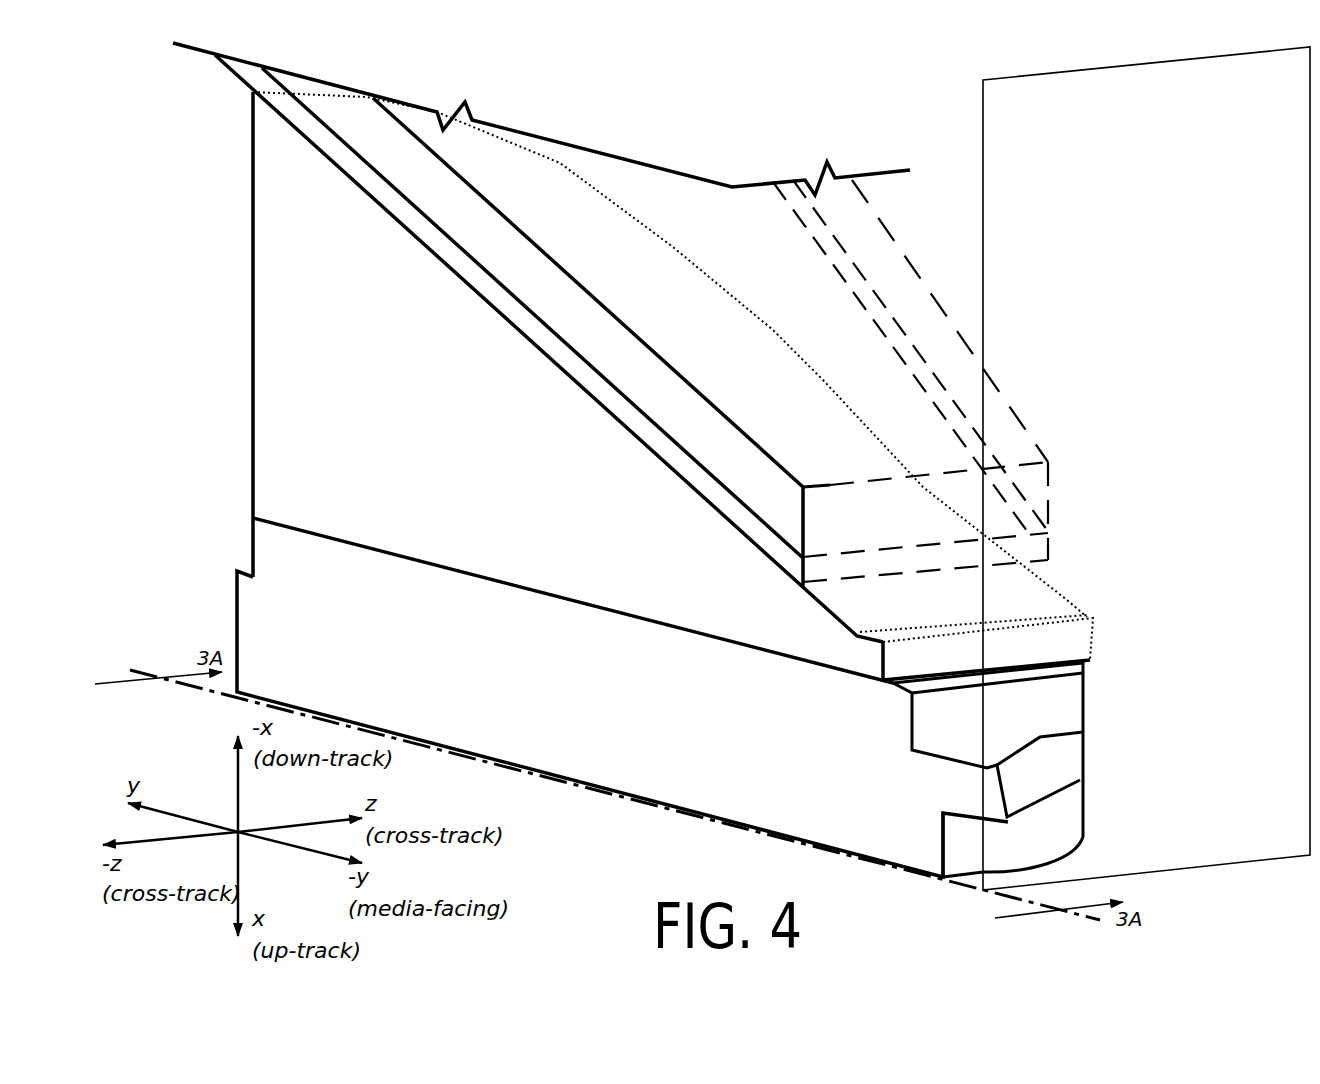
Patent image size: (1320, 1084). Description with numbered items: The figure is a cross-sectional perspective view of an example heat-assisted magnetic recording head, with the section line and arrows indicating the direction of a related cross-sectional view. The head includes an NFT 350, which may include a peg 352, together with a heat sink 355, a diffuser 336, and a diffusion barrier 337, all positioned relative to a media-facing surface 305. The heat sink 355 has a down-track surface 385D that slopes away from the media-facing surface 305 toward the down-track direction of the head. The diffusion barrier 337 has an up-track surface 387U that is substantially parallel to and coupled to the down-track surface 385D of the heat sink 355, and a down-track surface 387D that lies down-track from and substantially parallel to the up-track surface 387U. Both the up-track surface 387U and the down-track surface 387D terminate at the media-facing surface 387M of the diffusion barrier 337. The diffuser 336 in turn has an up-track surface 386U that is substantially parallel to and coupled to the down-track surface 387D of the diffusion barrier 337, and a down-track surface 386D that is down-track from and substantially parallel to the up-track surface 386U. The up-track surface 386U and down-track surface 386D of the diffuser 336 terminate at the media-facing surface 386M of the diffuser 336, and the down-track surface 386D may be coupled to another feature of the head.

The media-facing surface 305 is at (1282, 97).
The NFT 350 is at (610, 712).
The peg 352 is at (1013, 822).
The heat sink 355 is at (470, 429).
The diffuser 336 is at (532, 328).
The diffusion barrier 337 is at (447, 263).
The down-track surface of heat sink 385D is at (618, 427).
The up-track surface of diffuser 386U is at (826, 547).
The media-facing surface of diffuser 386M is at (925, 493).
The down-track surface of diffuser 386D is at (1122, 468).
The up-track surface of diffusion barrier 387U is at (623, 412).
The media-facing surface of diffusion barrier 387M is at (900, 558).
The down-track surface of diffusion barrier 387D is at (825, 565).